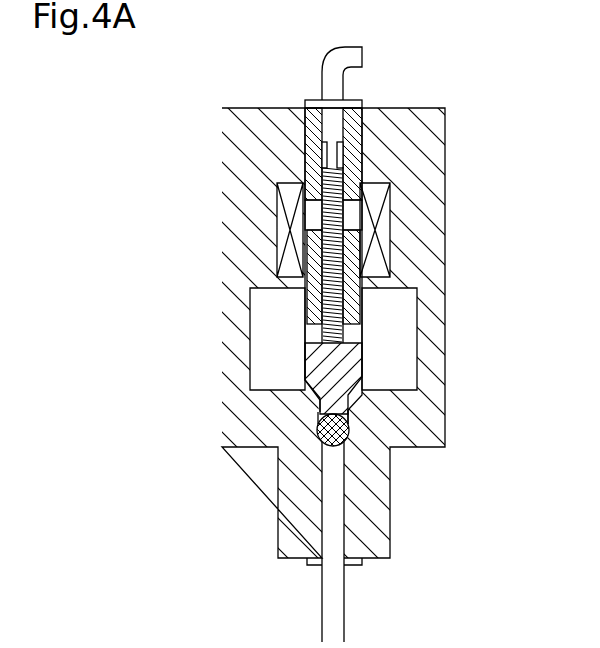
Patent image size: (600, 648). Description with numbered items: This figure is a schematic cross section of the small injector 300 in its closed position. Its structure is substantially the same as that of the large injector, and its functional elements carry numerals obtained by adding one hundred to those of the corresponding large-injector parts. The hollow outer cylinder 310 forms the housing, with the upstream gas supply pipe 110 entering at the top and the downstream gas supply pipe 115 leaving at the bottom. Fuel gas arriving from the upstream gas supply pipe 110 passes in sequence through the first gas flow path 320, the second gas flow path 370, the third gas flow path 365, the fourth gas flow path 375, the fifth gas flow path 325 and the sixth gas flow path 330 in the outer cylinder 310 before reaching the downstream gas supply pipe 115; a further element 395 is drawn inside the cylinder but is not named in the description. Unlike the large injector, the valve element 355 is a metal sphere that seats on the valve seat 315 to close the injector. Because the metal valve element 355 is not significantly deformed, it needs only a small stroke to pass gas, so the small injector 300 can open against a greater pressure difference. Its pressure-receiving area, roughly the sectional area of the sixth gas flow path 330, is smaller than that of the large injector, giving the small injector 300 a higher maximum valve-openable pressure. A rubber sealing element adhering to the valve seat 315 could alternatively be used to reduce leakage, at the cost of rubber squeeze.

The small injector 300 is at (188, 88).
The outer cylinder 310 is at (445, 113).
The first gas flow path 320 is at (332, 134).
The upstream gas supply pipe 110 is at (345, 82).
The second gas flow path 370 is at (347, 191).
The plunger 395 is at (355, 218).
The third gas flow path 365 is at (347, 297).
The fourth gas flow path 375 is at (350, 333).
The fifth gas flow path 325 is at (403, 375).
The valve element 355 is at (348, 432).
The valve seat 315 is at (320, 436).
The sixth gas flow path 330 is at (338, 500).
The downstream gas supply pipe 115 is at (347, 602).